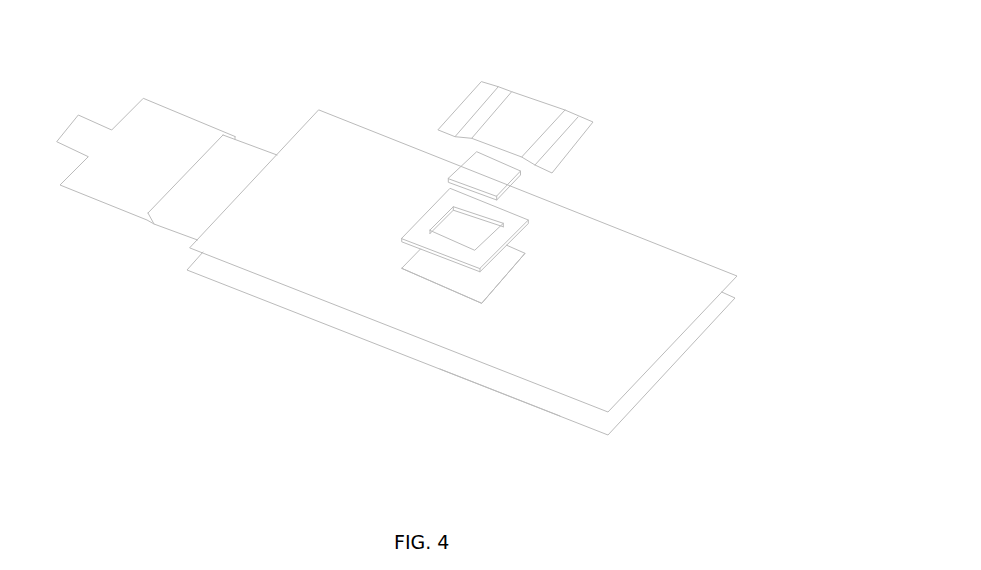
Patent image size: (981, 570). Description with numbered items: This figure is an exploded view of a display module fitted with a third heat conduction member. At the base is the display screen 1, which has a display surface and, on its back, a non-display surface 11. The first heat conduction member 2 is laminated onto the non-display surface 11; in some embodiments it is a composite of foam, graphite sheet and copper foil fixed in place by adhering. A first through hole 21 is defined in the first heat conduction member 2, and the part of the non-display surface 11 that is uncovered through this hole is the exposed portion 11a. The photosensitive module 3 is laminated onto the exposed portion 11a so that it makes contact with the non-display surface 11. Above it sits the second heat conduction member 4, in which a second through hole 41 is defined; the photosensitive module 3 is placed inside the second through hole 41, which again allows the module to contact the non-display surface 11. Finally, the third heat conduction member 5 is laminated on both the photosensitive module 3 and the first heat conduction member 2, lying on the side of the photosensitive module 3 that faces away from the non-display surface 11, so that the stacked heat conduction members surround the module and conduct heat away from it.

The display screen 1 is at (395, 357).
The non-display surface 11 is at (500, 378).
The exposed portion 11a is at (417, 338).
The first heat conduction member 2 is at (489, 261).
The first through hole 21 is at (400, 265).
The photosensitive module 3 is at (493, 172).
The second heat conduction member 4 is at (441, 205).
The second through hole 41 is at (482, 220).
The third heat conduction member 5 is at (515, 113).